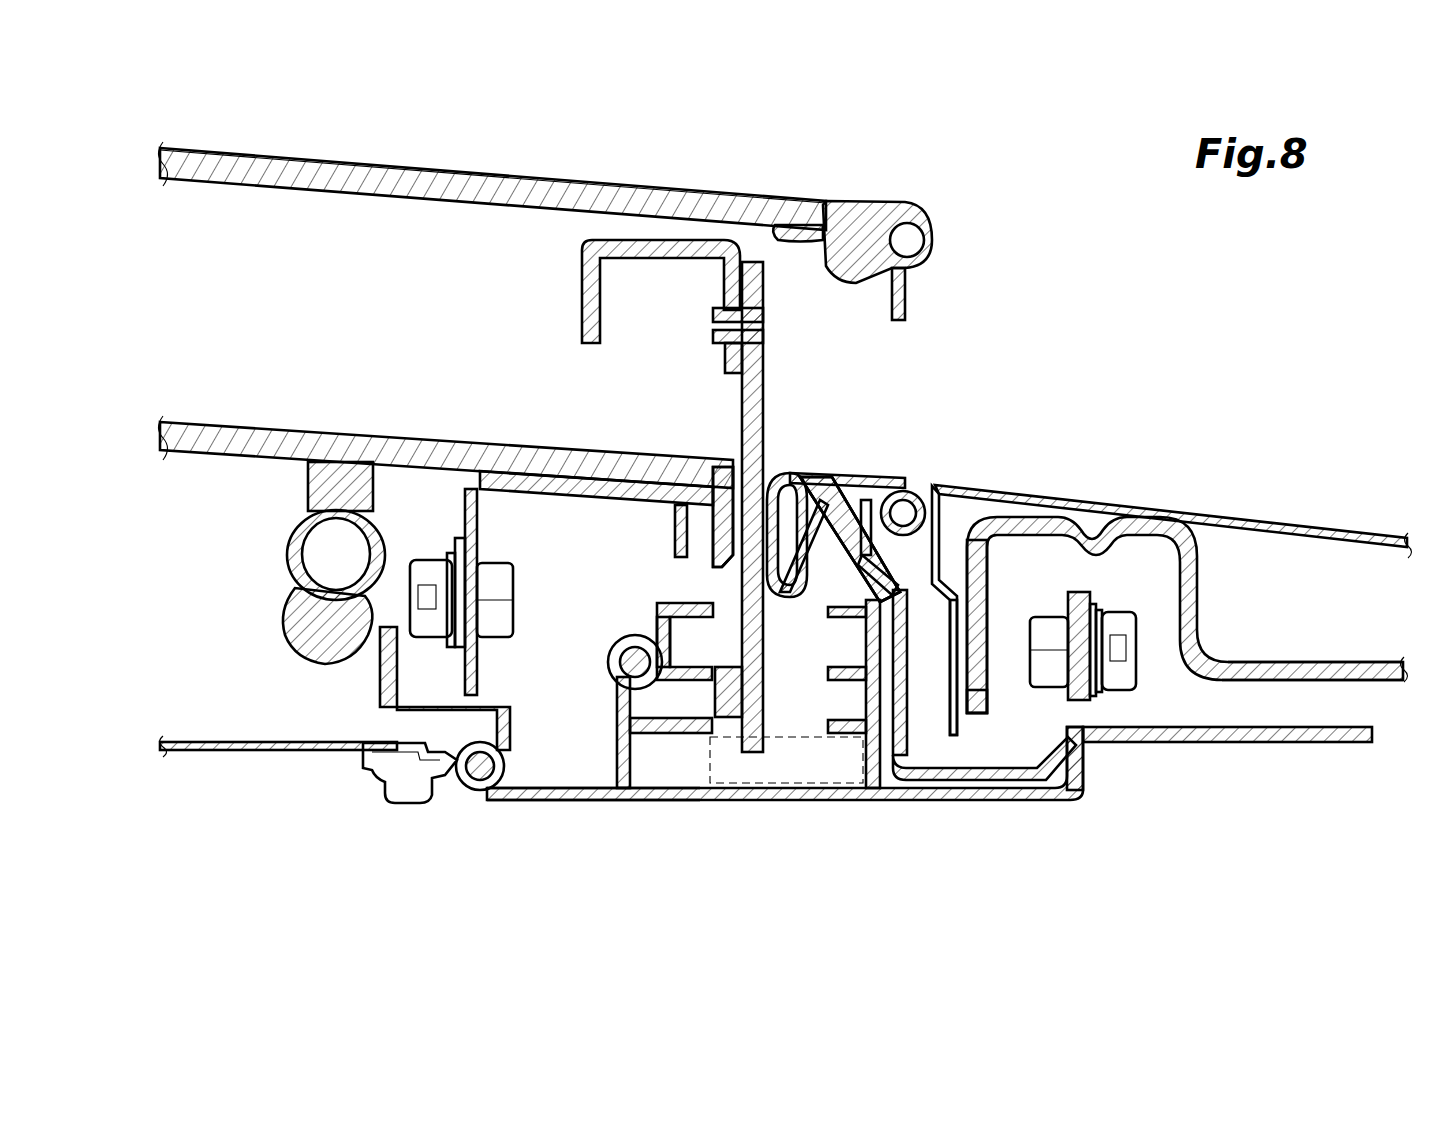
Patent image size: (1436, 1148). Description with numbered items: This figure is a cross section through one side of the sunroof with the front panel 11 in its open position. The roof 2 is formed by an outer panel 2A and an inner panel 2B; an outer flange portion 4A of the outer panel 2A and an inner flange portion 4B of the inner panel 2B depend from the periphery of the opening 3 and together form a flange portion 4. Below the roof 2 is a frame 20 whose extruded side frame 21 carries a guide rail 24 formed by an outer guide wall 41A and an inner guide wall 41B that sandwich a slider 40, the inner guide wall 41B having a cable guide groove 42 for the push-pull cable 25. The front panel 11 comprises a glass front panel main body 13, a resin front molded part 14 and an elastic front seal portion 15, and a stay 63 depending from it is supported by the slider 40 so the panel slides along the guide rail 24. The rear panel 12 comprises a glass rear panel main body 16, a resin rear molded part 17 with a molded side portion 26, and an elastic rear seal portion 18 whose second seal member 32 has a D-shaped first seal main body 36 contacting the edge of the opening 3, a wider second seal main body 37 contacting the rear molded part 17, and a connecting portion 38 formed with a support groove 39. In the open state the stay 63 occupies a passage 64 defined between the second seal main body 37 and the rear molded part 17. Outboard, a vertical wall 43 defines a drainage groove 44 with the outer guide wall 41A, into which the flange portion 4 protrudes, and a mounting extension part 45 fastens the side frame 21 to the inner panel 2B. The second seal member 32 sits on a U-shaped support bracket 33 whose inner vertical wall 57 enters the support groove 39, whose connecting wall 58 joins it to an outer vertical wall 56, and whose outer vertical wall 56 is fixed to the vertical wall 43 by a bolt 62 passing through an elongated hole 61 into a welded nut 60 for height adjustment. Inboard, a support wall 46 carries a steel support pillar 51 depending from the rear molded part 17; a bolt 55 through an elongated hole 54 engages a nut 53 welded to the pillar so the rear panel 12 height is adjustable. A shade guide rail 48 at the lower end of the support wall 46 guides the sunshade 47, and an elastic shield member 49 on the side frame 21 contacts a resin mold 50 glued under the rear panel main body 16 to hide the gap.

The roof 2 is at (1303, 512).
The outer panel 2A is at (1216, 506).
The inner panel 2B is at (1308, 660).
The opening 3 is at (931, 485).
The flange portion 4 is at (1025, 860).
The outer flange portion 4A is at (951, 772).
The inner flange portion 4B is at (989, 772).
The front panel 11 is at (368, 150).
The rear panel 12 is at (343, 440).
The front panel main body 13 is at (463, 162).
The front molded part 14 is at (840, 200).
The front seal portion 15 is at (893, 208).
The rear panel main body 16 is at (452, 466).
The rear molded part 17 is at (723, 517).
The rear seal portion 18 is at (850, 539).
The frame 20 is at (755, 806).
The side frame 21 is at (665, 802).
The guide rail 24 is at (683, 598).
The push-pull cable 25 is at (656, 634).
The molded side portion 26 is at (722, 462).
The second seal member 32 is at (838, 464).
The support bracket 33 is at (1084, 785).
The first seal main body 36 is at (899, 492).
The second seal main body 37 is at (785, 508).
The connecting portion 38 is at (870, 466).
The support groove 39 is at (880, 546).
The slider 40 is at (800, 737).
The outer guide wall 41A is at (888, 795).
The inner guide wall 41B is at (617, 776).
The cable guide groove 42 is at (608, 660).
The vertical wall 43 is at (1091, 598).
The drainage groove 44 is at (1022, 690).
The mounting extension part 45 is at (1265, 744).
The support wall 46 is at (466, 542).
The sunshade 47 is at (280, 752).
The shade guide rail 48 is at (390, 742).
The shield member 49 is at (288, 576).
The resin mold 50 is at (308, 490).
The support pillar 51 is at (478, 546).
The nut 53 is at (513, 576).
The elongated hole 54 is at (447, 575).
The bolt 55 is at (440, 640).
The outer vertical wall 56 is at (1068, 602).
The inner vertical wall 57 is at (905, 662).
The connecting wall 58 is at (1005, 762).
The nut 60 is at (1040, 634).
The elongated hole 61 is at (1101, 634).
The bolt 62 is at (1125, 686).
The stay 63 is at (765, 370).
The passage 64 is at (735, 425).